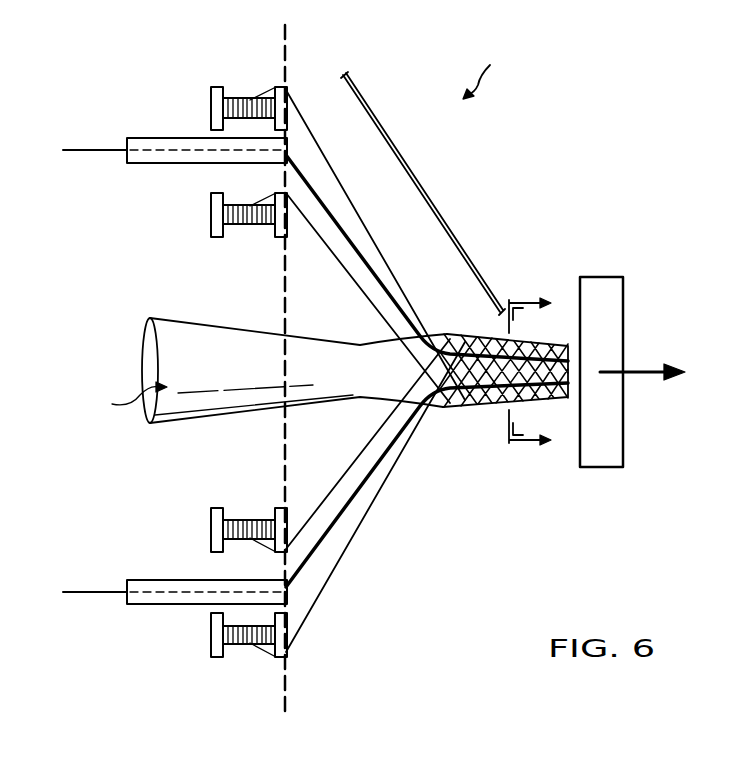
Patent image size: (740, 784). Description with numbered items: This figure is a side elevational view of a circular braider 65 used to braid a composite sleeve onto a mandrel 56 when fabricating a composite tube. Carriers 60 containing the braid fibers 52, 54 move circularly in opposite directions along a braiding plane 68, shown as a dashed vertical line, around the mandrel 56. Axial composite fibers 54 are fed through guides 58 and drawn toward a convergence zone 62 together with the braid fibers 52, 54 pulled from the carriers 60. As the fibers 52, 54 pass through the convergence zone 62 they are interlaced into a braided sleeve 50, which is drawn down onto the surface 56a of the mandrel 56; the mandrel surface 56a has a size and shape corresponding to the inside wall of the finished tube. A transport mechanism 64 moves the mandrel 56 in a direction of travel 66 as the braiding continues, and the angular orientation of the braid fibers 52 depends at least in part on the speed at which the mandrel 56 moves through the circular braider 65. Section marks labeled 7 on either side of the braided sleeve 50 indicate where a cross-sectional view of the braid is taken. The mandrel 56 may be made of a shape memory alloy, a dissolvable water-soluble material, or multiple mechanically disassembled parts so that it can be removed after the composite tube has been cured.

The braided sleeve 50 is at (487, 405).
The braid fibers 52 is at (374, 240).
The axial composite fibers 54 is at (95, 149).
The mandrel 56 is at (199, 330).
The mandrel surface 56a is at (119, 402).
The guides 58 is at (170, 138).
The carriers 60 is at (216, 86).
The convergence zone 62 is at (424, 193).
The transport mechanism 64 is at (602, 277).
The circular braider 65 is at (485, 69).
The direction of travel 66 is at (643, 368).
The braiding plane 68 is at (283, 32).
The section line 7- 7 is at (541, 371).